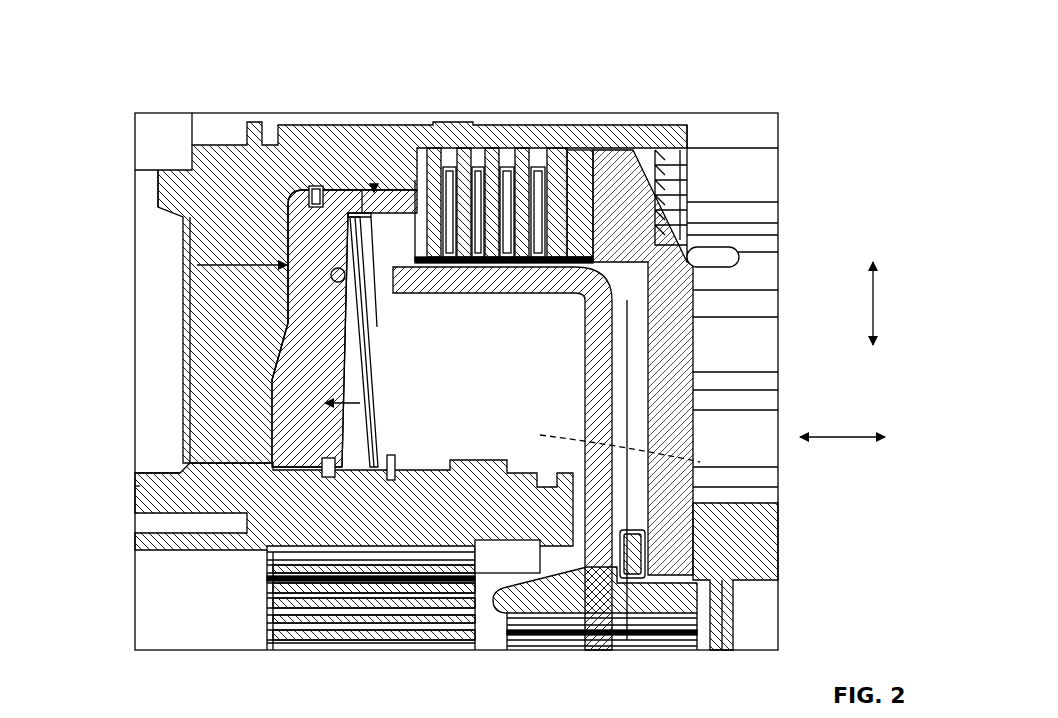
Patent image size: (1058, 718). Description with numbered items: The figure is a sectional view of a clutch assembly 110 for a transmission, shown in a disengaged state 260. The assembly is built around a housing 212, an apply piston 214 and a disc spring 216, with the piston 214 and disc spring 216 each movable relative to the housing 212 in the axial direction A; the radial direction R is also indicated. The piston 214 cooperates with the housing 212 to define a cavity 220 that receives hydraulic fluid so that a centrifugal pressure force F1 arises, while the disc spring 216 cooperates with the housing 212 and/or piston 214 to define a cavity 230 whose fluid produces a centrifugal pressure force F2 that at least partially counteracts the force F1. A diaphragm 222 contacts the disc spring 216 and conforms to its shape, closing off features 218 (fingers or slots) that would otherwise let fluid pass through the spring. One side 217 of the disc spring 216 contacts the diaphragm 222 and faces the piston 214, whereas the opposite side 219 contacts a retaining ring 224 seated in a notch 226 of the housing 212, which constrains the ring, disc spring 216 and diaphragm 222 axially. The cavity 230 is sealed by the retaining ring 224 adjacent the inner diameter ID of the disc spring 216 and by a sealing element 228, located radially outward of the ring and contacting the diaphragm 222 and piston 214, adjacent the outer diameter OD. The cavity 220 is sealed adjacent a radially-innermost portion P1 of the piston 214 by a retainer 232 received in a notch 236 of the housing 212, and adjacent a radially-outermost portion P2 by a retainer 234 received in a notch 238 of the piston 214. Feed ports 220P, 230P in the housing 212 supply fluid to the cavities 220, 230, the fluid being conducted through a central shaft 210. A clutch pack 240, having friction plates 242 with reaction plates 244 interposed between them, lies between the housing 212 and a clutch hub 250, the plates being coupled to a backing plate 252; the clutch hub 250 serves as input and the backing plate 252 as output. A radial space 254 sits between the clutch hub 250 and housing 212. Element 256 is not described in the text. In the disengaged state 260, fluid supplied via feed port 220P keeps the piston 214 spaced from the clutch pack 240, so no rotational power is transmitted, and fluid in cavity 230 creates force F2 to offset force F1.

The clutch assembly 110 is at (641, 106).
The central shaft 210 is at (285, 614).
The housing 212 is at (215, 325).
The piston 214 is at (283, 345).
The disc spring 216 is at (545, 200).
The side 217 is at (450, 240).
The features 218 is at (278, 372).
The side 219 is at (570, 255).
The cavity 220 is at (268, 415).
The feed port 220P is at (262, 485).
The diaphragm 222 is at (392, 480).
The retaining ring 224 is at (370, 462).
The notch 226 is at (467, 600).
The sealing element 228 is at (331, 277).
The cavity 230 is at (348, 445).
The feed port 230P is at (335, 480).
The retainer 232 is at (386, 475).
The retainer 234 is at (300, 200).
The notch 236 is at (321, 470).
The notch 238 is at (302, 188).
The clutch pack 240 is at (495, 205).
The friction plates 242 is at (482, 235).
The reaction plates 244 is at (286, 330).
The clutch hub 250 is at (603, 300).
The backing plate 252 is at (668, 330).
The radial space 254 is at (535, 410).
The axis line 256 is at (700, 462).
The disengaged state 260 is at (376, 184).
The outer diameter OD is at (352, 188).
The inner diameter ID is at (388, 472).
The radially-innermost portion P1 is at (132, 486).
The radially-outermost portion P2 is at (328, 186).
The centrifugal pressure force F1 is at (252, 262).
The centrifugal pressure force F2 is at (352, 400).
The radial direction R is at (878, 305).
The axial direction A is at (840, 437).